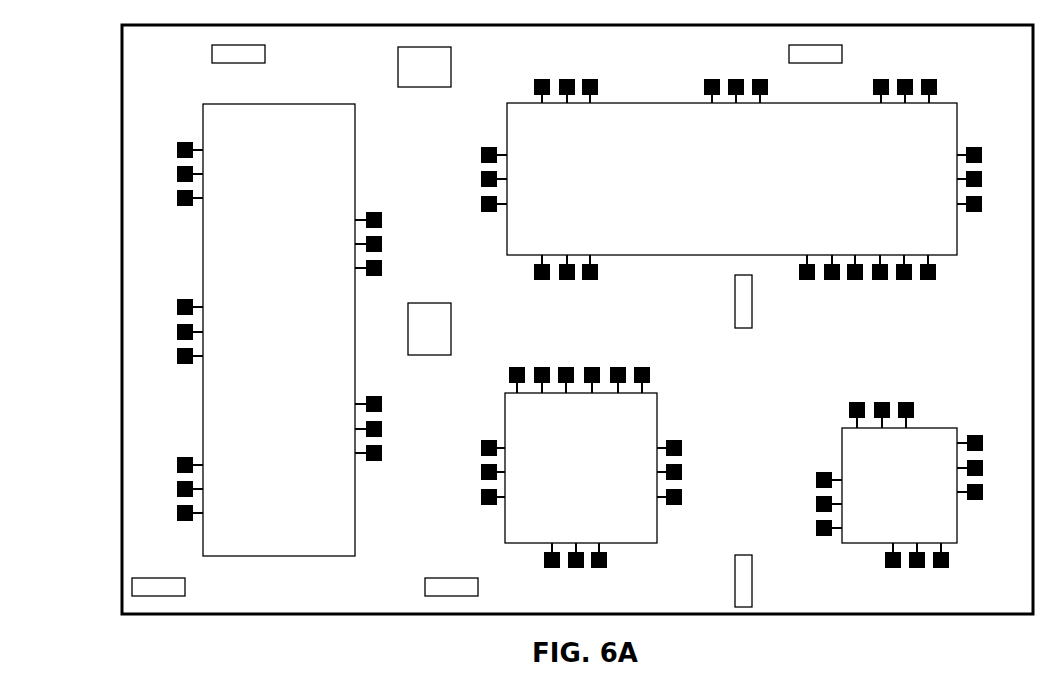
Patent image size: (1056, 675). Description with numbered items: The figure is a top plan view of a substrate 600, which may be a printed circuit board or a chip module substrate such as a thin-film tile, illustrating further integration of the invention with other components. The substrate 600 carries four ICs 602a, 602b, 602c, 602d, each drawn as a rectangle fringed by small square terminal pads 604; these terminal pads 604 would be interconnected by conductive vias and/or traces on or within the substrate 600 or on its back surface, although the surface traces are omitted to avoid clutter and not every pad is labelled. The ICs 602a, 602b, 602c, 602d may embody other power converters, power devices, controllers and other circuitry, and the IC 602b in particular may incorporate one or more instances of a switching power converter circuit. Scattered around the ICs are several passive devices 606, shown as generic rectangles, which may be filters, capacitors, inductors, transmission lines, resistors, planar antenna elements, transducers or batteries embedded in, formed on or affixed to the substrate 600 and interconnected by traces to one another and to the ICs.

The substrate 600 is at (121, 95).
The IC 602a is at (203, 104).
The IC 602b is at (678, 103).
The IC 602c is at (505, 424).
The IC 602d is at (840, 449).
The terminal pads 604 is at (481, 155).
The passive devices 606 is at (265, 54).